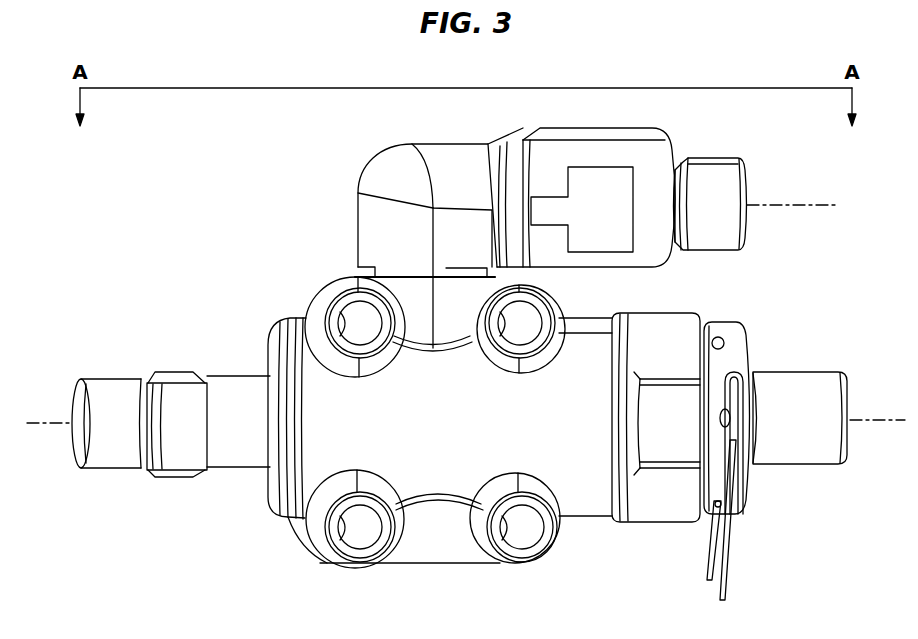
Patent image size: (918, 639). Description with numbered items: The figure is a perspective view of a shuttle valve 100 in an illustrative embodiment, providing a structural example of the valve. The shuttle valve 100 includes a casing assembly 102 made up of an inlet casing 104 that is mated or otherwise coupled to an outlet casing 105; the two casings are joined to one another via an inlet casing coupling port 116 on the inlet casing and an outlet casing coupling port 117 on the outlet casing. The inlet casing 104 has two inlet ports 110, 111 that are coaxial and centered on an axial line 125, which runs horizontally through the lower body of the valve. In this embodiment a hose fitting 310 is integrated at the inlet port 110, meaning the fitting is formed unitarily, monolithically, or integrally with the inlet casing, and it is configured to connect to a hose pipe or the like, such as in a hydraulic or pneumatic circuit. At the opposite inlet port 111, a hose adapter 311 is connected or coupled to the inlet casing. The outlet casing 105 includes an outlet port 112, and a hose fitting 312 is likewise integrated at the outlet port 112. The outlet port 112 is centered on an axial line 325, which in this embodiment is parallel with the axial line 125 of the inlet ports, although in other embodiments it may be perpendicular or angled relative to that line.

The shuttle valve 100 is at (232, 148).
The casing assembly 102 is at (232, 540).
The inlet casing 104 is at (437, 476).
The outlet casing 105 is at (392, 173).
The inlet port 110 is at (180, 448).
The inlet port 111 is at (667, 440).
The outlet port 112 is at (607, 180).
The inlet casing coupling port 116 is at (445, 323).
The outlet casing coupling port 117 is at (376, 248).
The axial line 125 is at (34, 427).
The hose fitting 310 is at (112, 397).
The hose adapter 311 is at (733, 342).
The hose fitting 312 is at (715, 183).
The axial line 325 is at (797, 204).